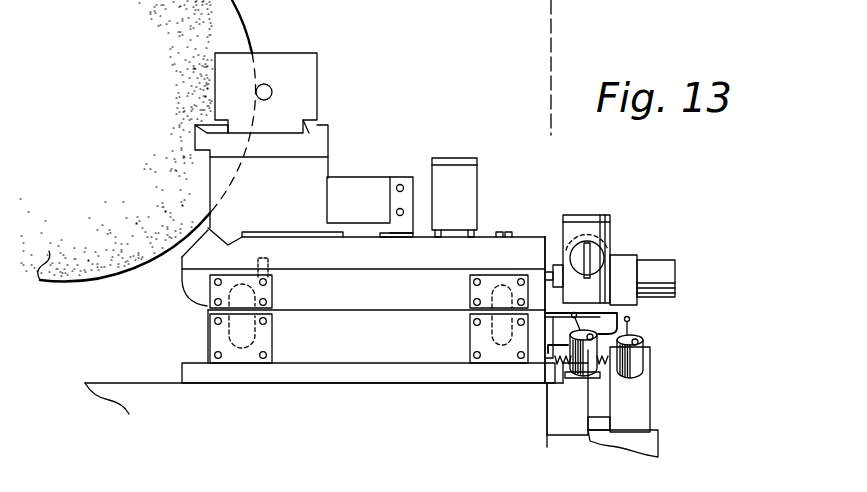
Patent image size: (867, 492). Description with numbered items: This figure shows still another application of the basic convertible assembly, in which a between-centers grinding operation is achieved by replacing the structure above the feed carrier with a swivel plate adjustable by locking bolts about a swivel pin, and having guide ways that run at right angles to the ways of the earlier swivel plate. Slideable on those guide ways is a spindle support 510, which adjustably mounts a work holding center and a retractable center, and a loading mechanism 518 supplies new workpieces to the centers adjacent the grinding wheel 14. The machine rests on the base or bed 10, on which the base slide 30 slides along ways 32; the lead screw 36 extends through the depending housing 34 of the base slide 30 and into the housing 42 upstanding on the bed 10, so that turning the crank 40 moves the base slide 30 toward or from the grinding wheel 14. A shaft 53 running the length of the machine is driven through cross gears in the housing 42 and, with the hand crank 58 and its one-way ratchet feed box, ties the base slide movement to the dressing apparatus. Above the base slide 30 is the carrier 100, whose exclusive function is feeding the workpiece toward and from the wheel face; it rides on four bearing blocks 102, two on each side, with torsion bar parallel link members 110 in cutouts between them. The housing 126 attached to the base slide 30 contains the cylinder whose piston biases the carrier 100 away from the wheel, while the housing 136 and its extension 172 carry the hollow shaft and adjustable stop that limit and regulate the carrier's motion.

The grinding wheel 14 is at (240, 21).
The spindle support 510 is at (216, 185).
The loading mechanism 518 is at (451, 178).
The extension of the housing 172 is at (600, 232).
The housing 136 is at (623, 262).
The housing 126 is at (667, 278).
The bearing blocks 102 is at (267, 292).
The carrier 100 is at (407, 299).
The torsion bar parallel link members 110 is at (208, 327).
The base slide 30 is at (392, 346).
The ways 32 is at (192, 363).
The base or bed 10 is at (408, 411).
The crank 40 is at (617, 324).
The hand crank 58 is at (632, 323).
The lead screw 36 is at (628, 382).
The depending housing 34 is at (573, 383).
The shaft 53 is at (598, 418).
The housing 42 is at (641, 418).